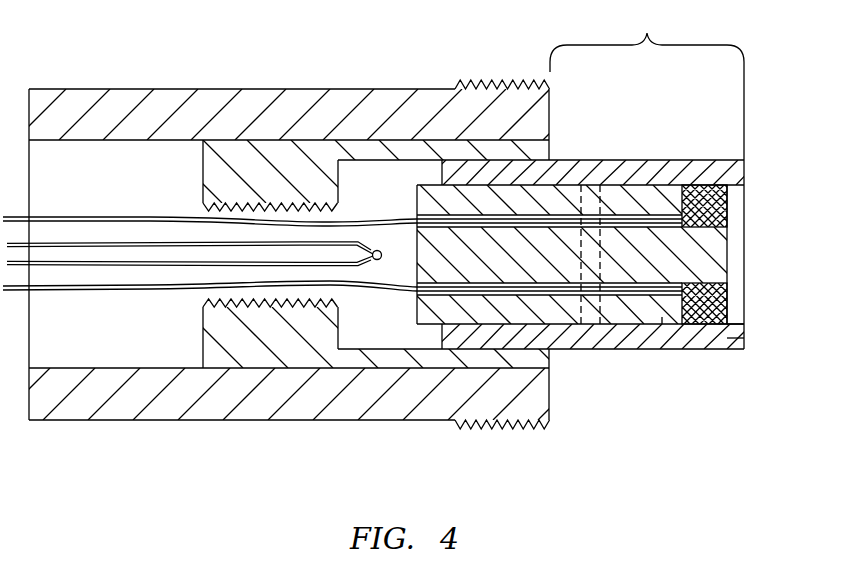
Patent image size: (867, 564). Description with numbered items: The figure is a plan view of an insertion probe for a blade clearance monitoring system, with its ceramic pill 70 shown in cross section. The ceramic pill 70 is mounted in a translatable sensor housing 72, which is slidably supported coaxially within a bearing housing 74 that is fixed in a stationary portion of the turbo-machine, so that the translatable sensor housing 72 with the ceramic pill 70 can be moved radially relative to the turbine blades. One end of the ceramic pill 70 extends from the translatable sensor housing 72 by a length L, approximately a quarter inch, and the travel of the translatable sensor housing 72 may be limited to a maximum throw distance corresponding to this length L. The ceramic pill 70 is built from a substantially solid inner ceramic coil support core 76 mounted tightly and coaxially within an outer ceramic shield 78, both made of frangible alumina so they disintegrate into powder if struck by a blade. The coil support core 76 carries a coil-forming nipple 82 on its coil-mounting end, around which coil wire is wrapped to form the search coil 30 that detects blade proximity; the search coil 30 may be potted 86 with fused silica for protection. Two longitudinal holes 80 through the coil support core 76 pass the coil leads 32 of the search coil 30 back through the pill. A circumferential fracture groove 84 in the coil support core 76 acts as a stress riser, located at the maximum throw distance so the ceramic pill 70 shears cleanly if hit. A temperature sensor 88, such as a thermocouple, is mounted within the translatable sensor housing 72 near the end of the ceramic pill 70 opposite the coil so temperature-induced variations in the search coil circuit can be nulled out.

The search coil 30 is at (732, 203).
The coil leads 32 is at (147, 288).
The ceramic pill 70 is at (642, 152).
The translatable sensor housing 72 is at (232, 337).
The bearing housing 74 is at (397, 93).
The inner ceramic coil support core 76 is at (662, 317).
The outer ceramic shield 78 is at (727, 338).
The longitudinal holes 80 is at (652, 223).
The coil-forming nipple 82 is at (717, 252).
The fracture groove 84 is at (591, 200).
The potting 86 is at (733, 300).
The temperature sensor 88 is at (360, 265).
The length of the extended portion of the ceramic pill L is at (647, 84).